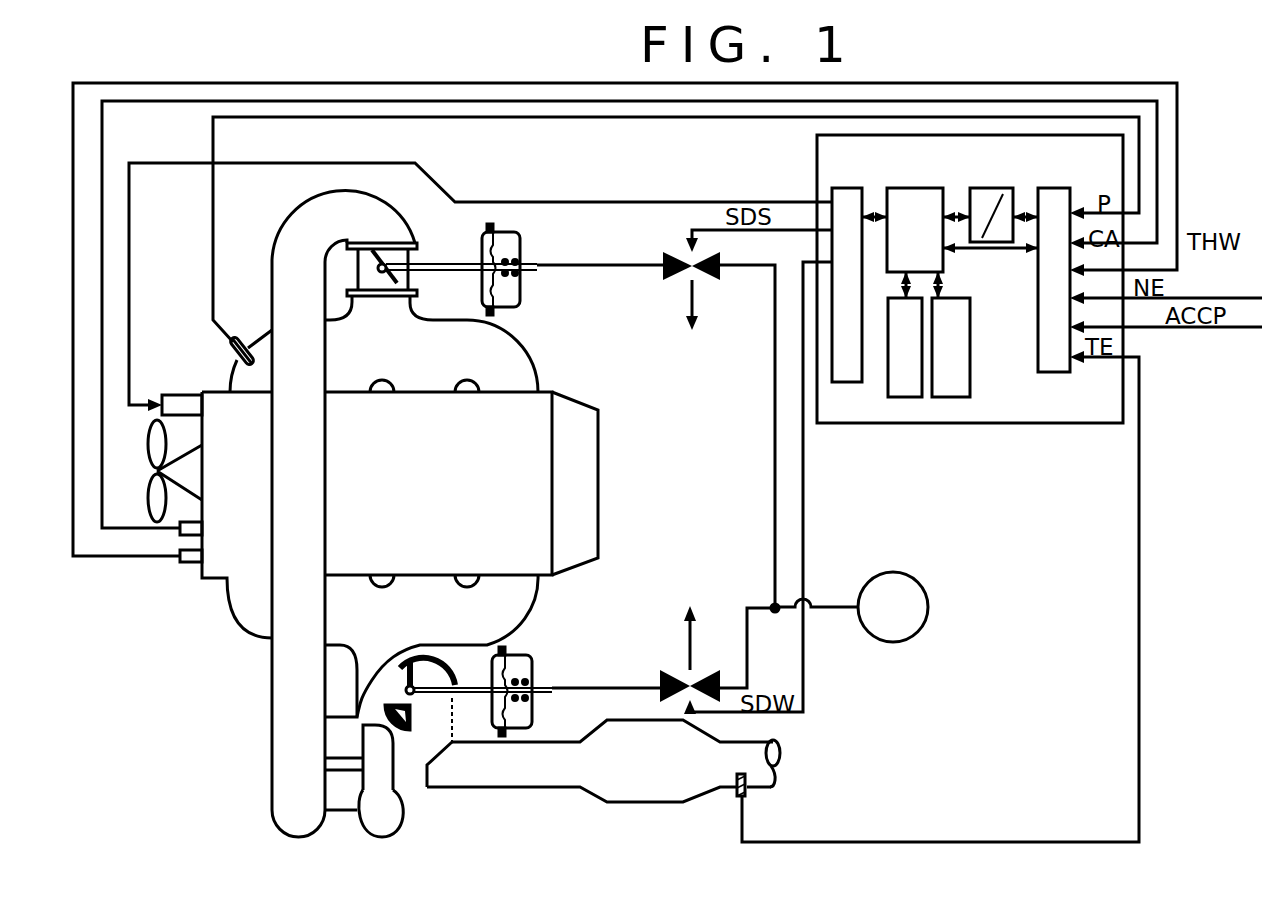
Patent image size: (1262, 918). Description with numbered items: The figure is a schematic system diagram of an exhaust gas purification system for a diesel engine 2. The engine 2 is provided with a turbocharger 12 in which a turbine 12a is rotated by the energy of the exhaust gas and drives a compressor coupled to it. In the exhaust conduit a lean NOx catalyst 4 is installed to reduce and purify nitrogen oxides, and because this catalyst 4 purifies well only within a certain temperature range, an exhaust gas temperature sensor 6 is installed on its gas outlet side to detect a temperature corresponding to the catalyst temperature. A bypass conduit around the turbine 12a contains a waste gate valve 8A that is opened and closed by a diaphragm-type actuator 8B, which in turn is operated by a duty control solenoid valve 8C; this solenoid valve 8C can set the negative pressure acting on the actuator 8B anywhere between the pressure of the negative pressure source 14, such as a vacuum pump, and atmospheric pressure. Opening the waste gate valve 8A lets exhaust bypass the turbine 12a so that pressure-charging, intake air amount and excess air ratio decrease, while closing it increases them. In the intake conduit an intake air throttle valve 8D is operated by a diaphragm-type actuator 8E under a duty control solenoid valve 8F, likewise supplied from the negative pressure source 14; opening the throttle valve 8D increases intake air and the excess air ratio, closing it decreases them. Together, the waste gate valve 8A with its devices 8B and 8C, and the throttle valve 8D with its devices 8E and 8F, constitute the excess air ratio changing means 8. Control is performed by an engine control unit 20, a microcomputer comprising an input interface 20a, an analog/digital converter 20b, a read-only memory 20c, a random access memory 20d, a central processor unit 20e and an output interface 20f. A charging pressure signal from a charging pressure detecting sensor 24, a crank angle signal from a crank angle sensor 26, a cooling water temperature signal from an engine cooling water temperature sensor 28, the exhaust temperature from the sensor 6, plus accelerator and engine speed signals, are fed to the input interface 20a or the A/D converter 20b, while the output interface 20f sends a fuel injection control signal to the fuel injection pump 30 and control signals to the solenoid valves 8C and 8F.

The diesel engine 2 is at (533, 462).
The lean NOx catalyst 4 is at (640, 788).
The exhaust gas temperature sensor 6 is at (745, 790).
The excess air ratio changing means 8 is at (643, 579).
The waste gate valve 8A is at (435, 683).
The diaphragm-type actuator 8B is at (533, 660).
The duty control solenoid valve 8C is at (658, 686).
The intake air throttle valve 8D is at (410, 257).
The diaphragm-type actuator 8E is at (523, 247).
The duty control solenoid valve 8F is at (662, 262).
The turbocharger 12 is at (400, 800).
The turbine 12a is at (380, 762).
The negative pressure source 14 is at (928, 607).
The engine control unit 20 is at (806, 188).
The input interface 20a is at (1068, 182).
The analog/digital converter 20b is at (995, 182).
The read-only memory 20c is at (912, 397).
The random access memory 20d is at (948, 398).
The central processor unit 20e is at (925, 182).
The output interface 20f is at (847, 182).
The charging pressure detecting sensor 24 is at (227, 350).
The crank angle sensor 26 is at (190, 520).
The engine cooling water temperature sensor 28 is at (184, 564).
The fuel injection pump 30 is at (177, 398).